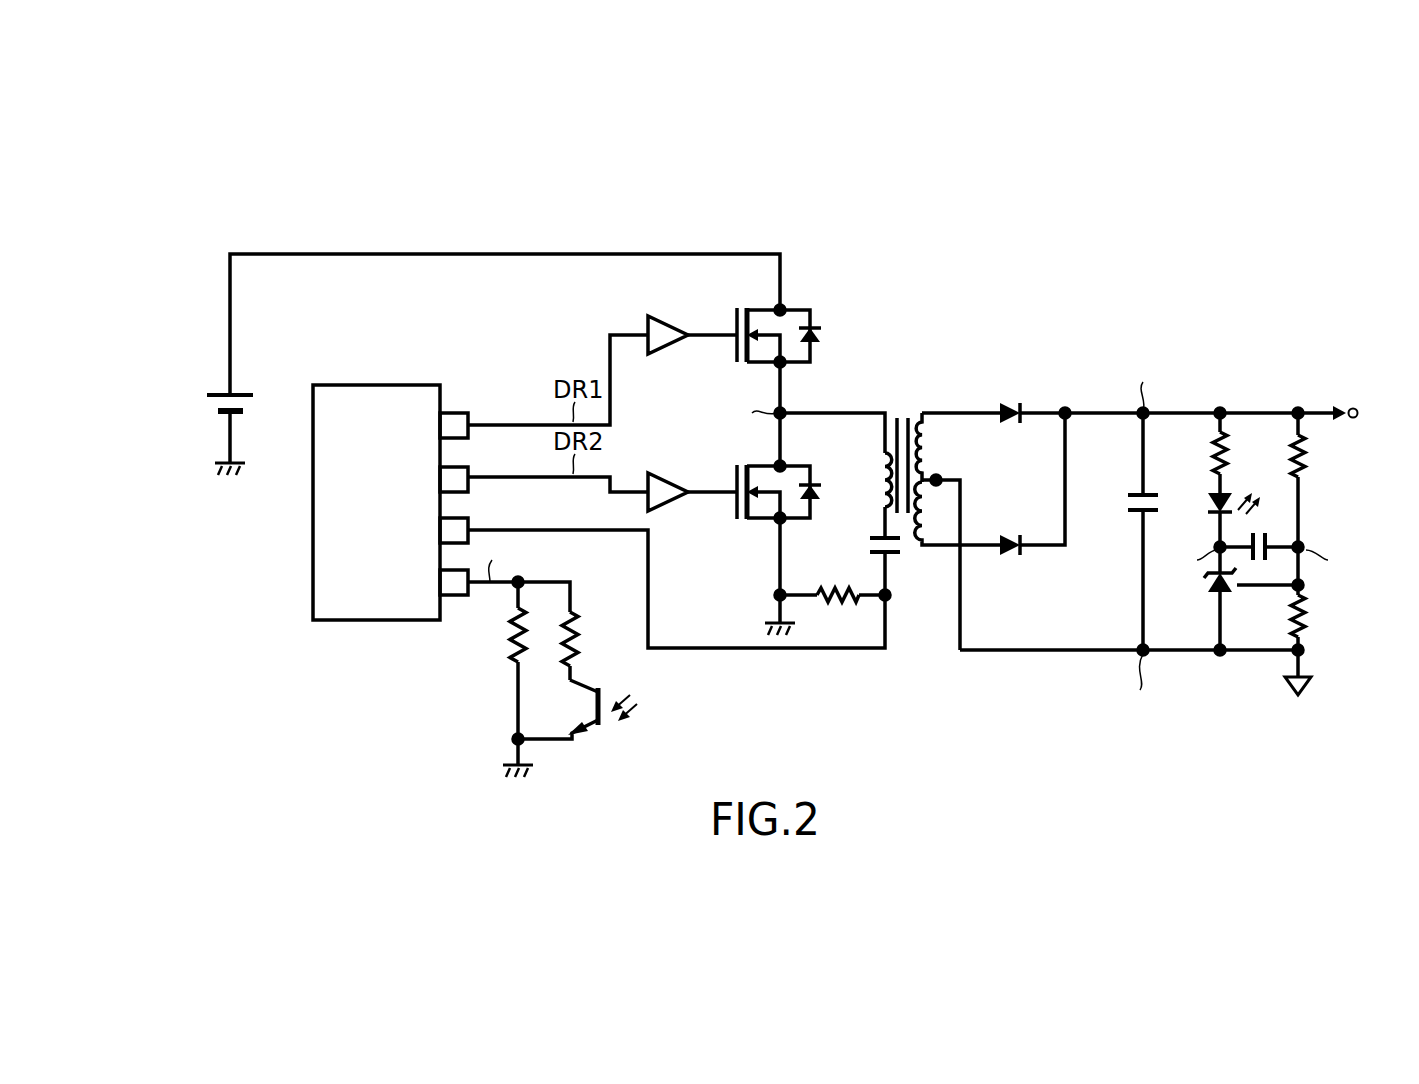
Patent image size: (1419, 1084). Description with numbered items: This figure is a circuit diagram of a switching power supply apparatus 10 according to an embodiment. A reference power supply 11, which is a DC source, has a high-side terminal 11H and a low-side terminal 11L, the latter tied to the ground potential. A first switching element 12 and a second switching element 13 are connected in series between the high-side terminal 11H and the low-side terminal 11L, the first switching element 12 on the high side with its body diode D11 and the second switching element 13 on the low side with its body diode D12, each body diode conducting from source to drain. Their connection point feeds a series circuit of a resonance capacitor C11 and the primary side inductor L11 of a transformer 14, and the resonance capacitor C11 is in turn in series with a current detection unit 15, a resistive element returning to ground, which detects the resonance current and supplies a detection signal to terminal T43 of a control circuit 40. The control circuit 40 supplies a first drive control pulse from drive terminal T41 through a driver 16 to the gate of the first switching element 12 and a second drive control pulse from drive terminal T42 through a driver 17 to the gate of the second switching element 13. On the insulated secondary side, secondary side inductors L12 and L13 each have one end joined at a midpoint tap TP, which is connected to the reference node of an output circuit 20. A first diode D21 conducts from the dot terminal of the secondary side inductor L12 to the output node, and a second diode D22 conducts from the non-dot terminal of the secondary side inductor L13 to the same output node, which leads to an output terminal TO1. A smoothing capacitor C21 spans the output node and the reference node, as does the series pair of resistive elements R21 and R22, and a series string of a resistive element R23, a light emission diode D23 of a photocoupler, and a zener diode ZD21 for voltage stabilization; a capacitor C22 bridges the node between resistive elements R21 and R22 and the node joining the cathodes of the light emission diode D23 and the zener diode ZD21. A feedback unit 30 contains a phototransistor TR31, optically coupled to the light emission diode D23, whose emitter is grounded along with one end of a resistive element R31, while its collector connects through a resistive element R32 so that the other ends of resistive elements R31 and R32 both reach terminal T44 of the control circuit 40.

The switching power supply apparatus 10 is at (817, 160).
The reference power supply 11 is at (208, 403).
The high-side terminal 11H is at (228, 394).
The low-side terminal 11L is at (229, 415).
The first switching element 12 is at (756, 302).
The second switching element 13 is at (738, 540).
The transformer 14 is at (905, 407).
The current detection unit 15 is at (836, 606).
The driver 16 is at (668, 355).
The driver 17 is at (668, 473).
The output circuit 20 is at (1106, 616).
The feedback unit 30 is at (591, 770).
The control circuit 40 is at (378, 385).
The drive terminal T41 is at (470, 411).
The drive terminal T42 is at (470, 465).
The terminal T43 is at (470, 516).
The terminal T44 is at (459, 596).
The body diode D11 is at (822, 335).
The body diode D12 is at (822, 492).
The resonance capacitor C11 is at (868, 546).
The primary side inductor L11 is at (880, 470).
The secondary side inductor L12 is at (930, 450).
The secondary side inductor L13 is at (916, 548).
The midpoint tap TP is at (942, 480).
The first diode D21 is at (1007, 402).
The second diode D22 is at (1007, 558).
The output terminal TO1 is at (1355, 409).
The smoothing capacitor C21 is at (1128, 499).
The resistive element R23 is at (1211, 457).
The light emission diode D23 is at (1207, 499).
The capacitor C22 is at (1259, 555).
The zener diode ZD21 is at (1211, 596).
The resistive element R21 is at (1308, 463).
The resistive element R22 is at (1308, 635).
The resistive element R31 is at (498, 660).
The resistive element R32 is at (596, 646).
The phototransistor TR31 is at (589, 707).